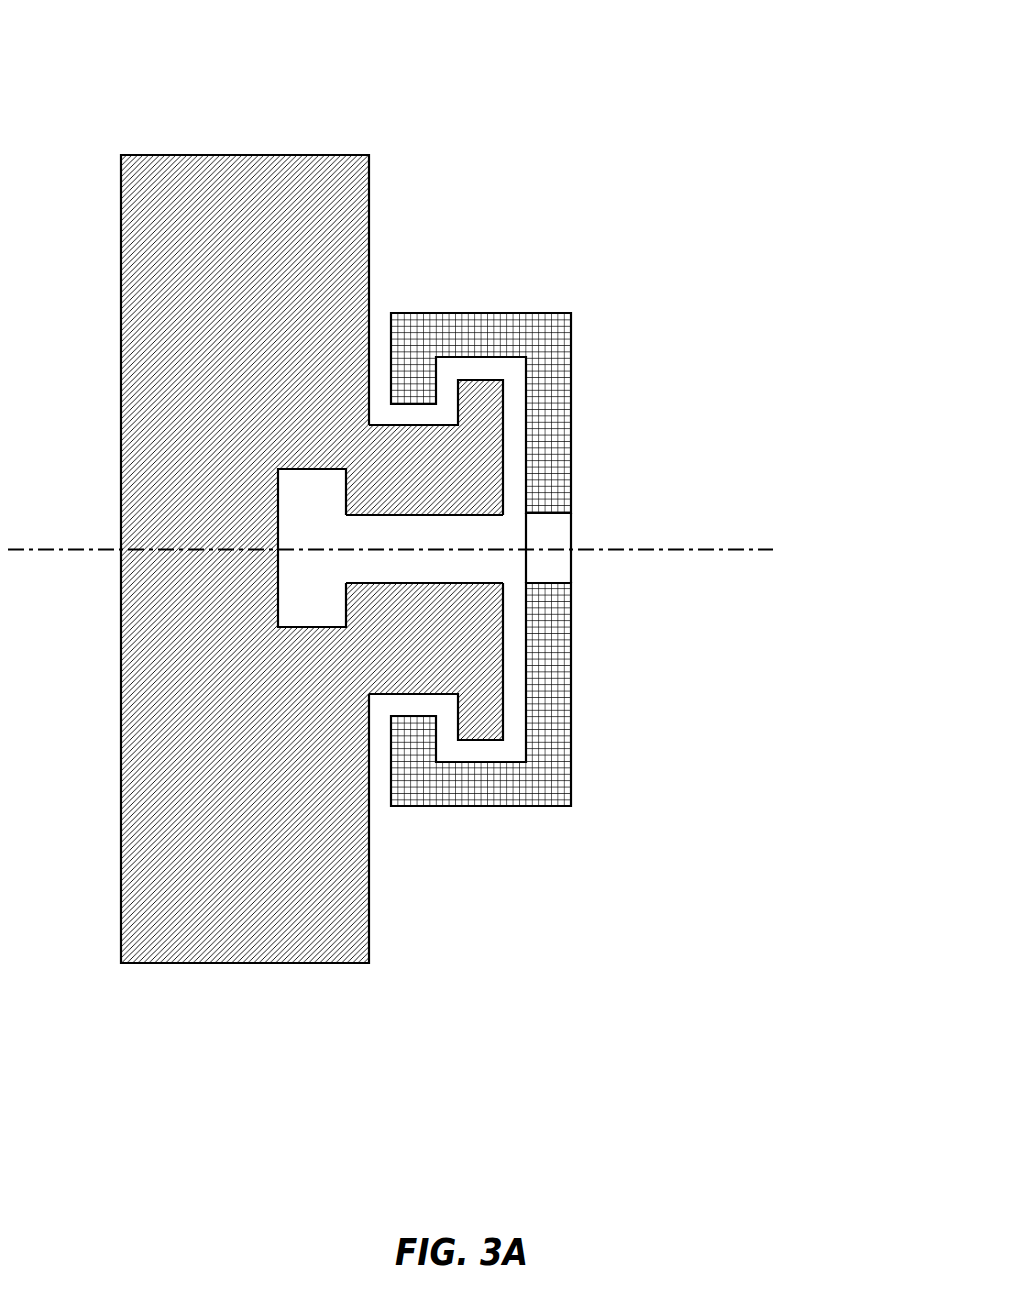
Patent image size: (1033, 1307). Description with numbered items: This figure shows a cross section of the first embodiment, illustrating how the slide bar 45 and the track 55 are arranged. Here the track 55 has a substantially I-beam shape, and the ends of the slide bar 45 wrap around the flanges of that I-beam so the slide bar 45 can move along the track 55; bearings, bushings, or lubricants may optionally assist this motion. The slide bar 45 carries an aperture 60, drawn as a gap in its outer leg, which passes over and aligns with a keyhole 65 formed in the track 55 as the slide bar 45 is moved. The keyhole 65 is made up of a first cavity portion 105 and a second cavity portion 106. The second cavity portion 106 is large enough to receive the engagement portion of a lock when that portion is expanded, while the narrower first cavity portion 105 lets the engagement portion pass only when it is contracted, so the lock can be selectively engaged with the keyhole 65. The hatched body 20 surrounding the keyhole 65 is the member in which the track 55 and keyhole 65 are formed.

The housing body 20 is at (370, 222).
The slide bar 45 is at (571, 333).
The track 55 is at (503, 433).
The aperture 60 is at (573, 521).
The keyhole 65 is at (460, 585).
The first cavity portion 105 is at (375, 513).
The second cavity portion 106 is at (285, 468).